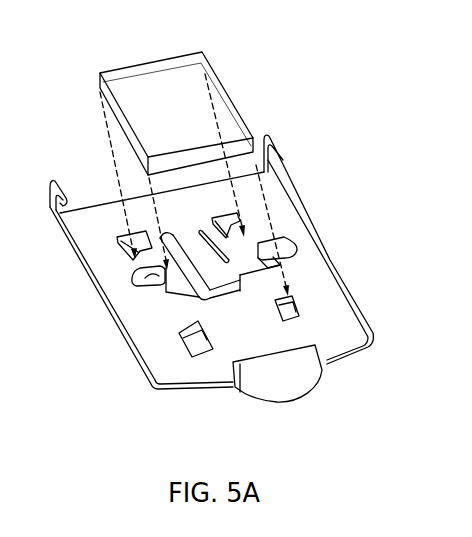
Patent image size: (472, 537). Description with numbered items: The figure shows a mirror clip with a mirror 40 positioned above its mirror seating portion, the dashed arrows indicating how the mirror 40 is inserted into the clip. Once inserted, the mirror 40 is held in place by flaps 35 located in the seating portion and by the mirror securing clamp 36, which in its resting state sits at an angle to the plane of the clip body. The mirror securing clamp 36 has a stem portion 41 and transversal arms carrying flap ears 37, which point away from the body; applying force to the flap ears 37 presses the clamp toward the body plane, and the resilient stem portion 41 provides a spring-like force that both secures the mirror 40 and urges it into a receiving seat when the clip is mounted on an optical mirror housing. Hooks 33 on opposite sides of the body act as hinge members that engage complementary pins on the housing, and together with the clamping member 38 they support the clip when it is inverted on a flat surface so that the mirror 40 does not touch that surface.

The hooks 33 is at (280, 152).
The flaps 35 is at (277, 310).
The mirror securing clamp 36 is at (160, 291).
The flap ears 37 is at (138, 277).
The clamping member 38 is at (298, 377).
The mirror 40 is at (220, 69).
The stem portion 41 is at (220, 266).